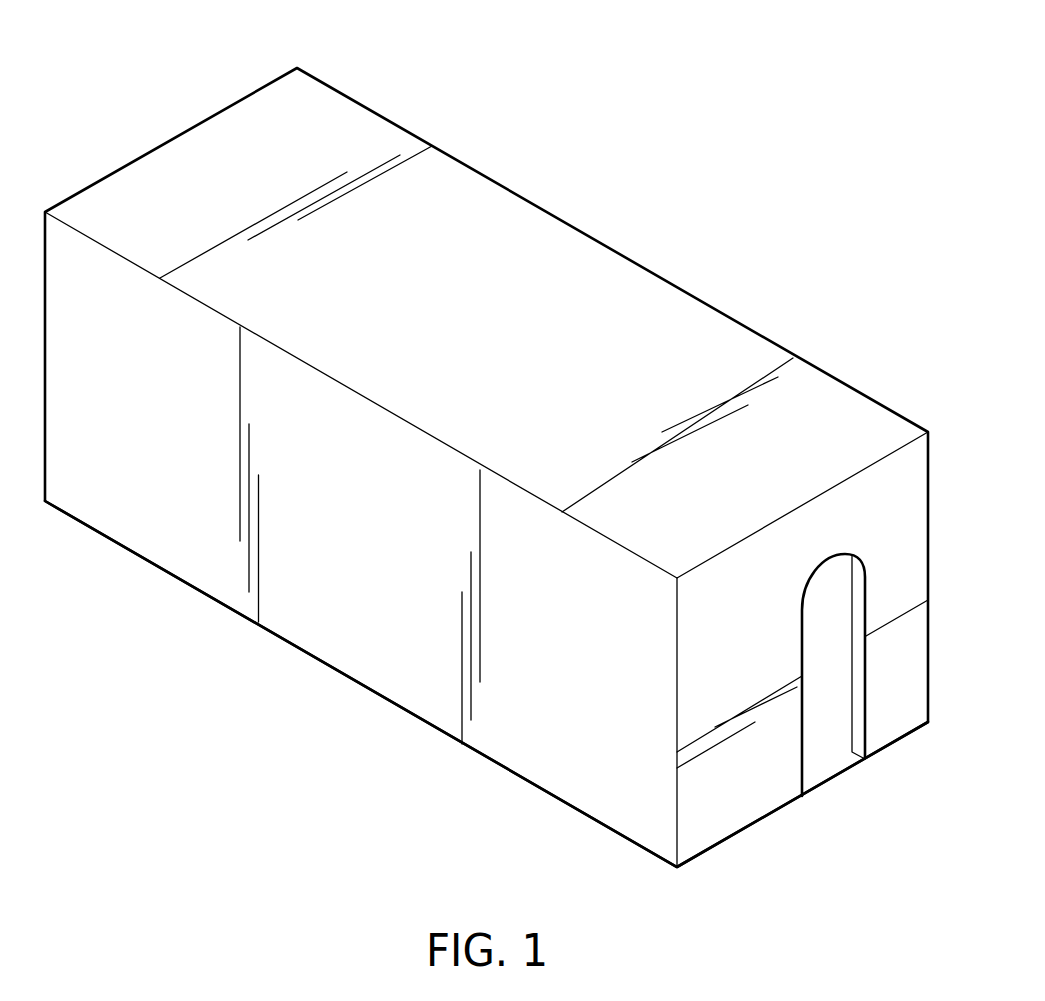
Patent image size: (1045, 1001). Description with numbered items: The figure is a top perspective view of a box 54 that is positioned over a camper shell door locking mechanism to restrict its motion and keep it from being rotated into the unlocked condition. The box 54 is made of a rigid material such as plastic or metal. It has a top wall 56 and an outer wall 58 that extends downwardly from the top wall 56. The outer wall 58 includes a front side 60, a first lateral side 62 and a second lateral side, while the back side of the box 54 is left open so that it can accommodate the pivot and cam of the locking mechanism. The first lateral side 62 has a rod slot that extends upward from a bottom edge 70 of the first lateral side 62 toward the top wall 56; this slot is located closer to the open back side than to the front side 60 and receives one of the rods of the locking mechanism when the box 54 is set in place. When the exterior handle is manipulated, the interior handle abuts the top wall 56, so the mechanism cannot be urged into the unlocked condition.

The box 54 is at (527, 157).
The top wall 56 is at (423, 193).
The outer wall 58 is at (416, 673).
The front side 60 is at (286, 612).
The first lateral side 62 is at (782, 760).
The bottom edge 70 is at (738, 836).